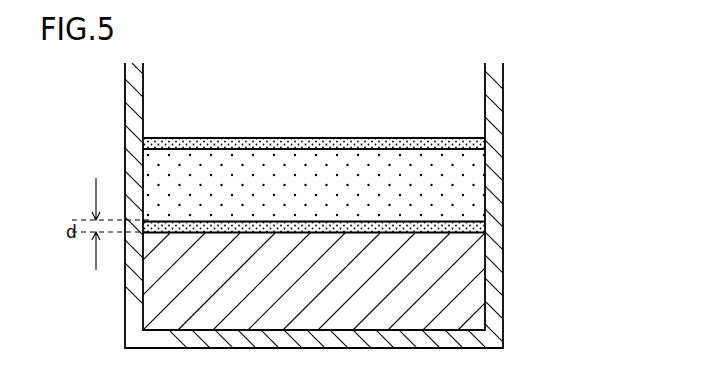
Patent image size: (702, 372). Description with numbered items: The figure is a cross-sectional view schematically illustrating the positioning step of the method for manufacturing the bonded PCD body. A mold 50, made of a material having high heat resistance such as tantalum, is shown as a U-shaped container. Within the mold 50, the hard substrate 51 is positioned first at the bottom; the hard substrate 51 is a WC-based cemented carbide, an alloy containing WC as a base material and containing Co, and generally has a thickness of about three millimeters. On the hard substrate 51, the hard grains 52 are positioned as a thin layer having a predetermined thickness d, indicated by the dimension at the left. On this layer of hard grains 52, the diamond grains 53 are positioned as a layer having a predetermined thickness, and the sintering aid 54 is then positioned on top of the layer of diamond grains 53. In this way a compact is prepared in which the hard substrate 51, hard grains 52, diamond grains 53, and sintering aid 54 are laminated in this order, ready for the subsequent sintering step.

The mold 50 is at (500, 97).
The hard substrate 51 is at (476, 282).
The hard grains 52 is at (478, 226).
The diamond grains 53 is at (476, 186).
The sintering aid 54 is at (484, 143).